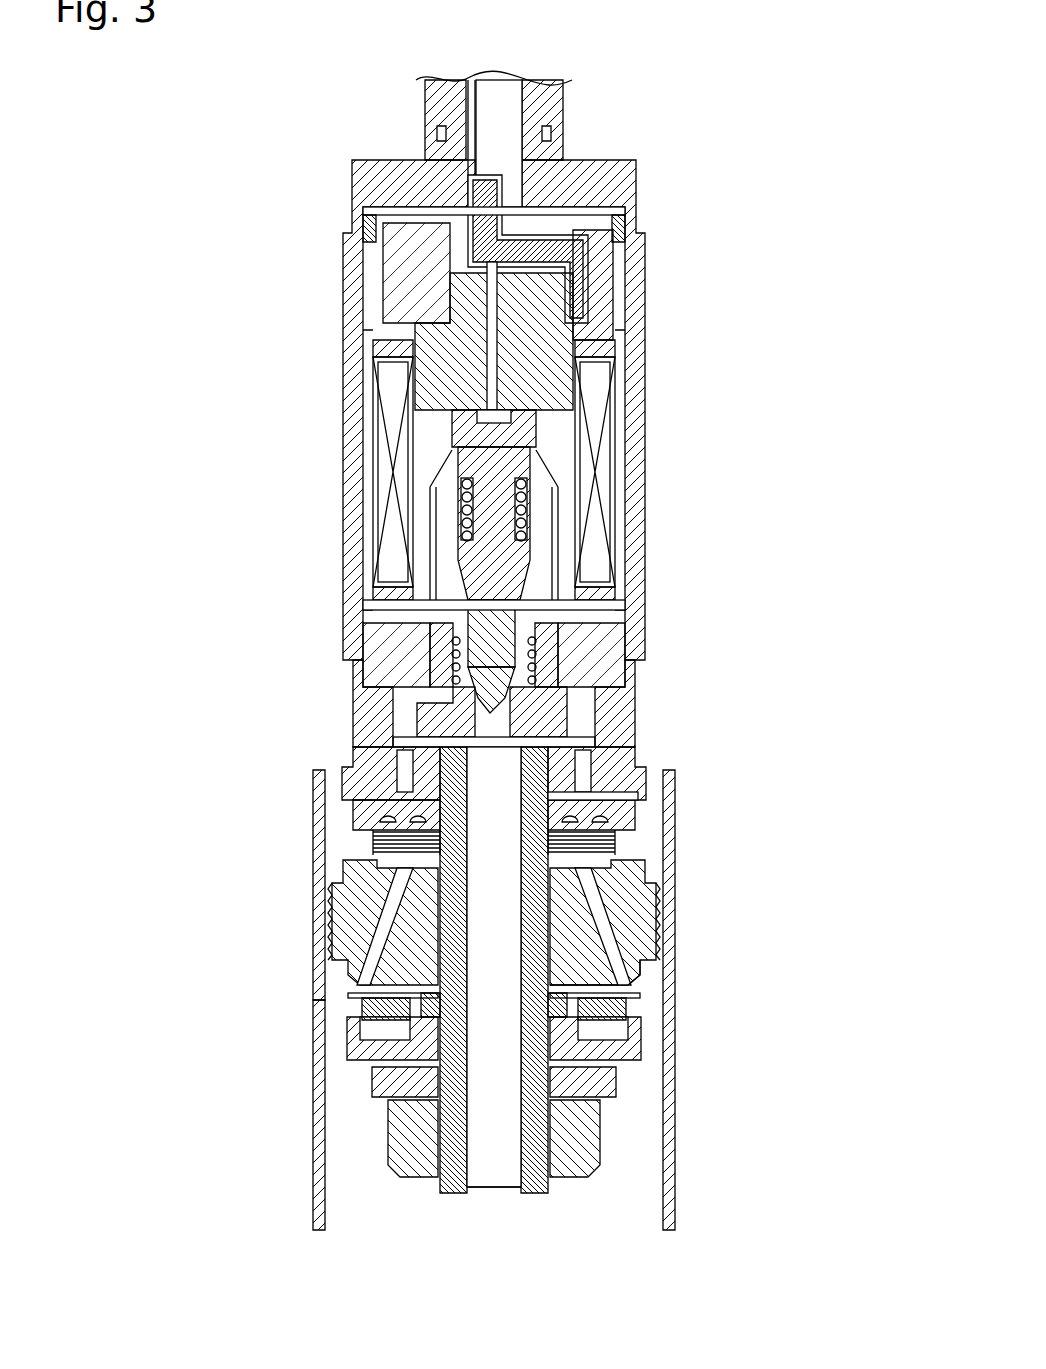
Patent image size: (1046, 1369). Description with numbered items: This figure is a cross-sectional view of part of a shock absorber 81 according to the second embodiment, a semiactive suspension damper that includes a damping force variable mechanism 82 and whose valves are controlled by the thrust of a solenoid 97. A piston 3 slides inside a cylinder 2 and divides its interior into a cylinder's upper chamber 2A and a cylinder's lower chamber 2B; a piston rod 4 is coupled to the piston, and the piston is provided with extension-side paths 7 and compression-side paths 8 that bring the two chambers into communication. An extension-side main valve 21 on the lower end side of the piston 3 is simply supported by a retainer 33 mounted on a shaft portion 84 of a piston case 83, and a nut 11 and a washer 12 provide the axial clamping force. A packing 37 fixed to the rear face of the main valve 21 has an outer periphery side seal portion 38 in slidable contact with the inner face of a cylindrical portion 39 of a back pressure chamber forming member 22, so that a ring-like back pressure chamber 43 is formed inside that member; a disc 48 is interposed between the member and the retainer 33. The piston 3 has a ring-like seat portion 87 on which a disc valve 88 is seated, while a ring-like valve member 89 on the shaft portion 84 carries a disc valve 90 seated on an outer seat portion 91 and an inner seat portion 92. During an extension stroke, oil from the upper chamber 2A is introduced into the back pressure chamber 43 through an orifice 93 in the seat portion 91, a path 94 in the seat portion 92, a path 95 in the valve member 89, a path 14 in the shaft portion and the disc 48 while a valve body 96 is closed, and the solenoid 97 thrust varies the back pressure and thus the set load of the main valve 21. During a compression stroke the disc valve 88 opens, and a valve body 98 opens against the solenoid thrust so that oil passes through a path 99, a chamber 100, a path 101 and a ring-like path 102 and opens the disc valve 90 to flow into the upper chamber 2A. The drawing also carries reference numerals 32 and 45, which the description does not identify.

The piston rod 4 is at (432, 125).
The shock absorber 81 is at (696, 124).
The solenoid 97 is at (630, 462).
The damping force variable mechanism 82 is at (347, 568).
The valve body 96 is at (538, 645).
The piston case 83 is at (634, 695).
The valve body 98 is at (420, 725).
The chamber 100 is at (430, 712).
The path 101 is at (630, 737).
The path 95 is at (627, 768).
The path 94 is at (600, 780).
The cylinder's upper chamber 2A is at (313, 777).
The ring-like path 102 is at (400, 778).
The seat portion 92 is at (400, 800).
The seat portion 91 is at (395, 815).
The disc valve 88 is at (385, 840).
The seat portion 87 is at (390, 852).
The compression-side path 8 is at (400, 885).
The retainer 33 is at (400, 992).
The packing 37 is at (375, 1013).
The disc 48 is at (360, 1038).
The cylinder's lower chamber 2B is at (350, 1160).
The nut 11 is at (415, 1180).
The shaft portion 84 is at (455, 1185).
The path 99 is at (497, 1185).
The cylinder 2 is at (672, 1152).
The washer 12 is at (600, 1100).
The back pressure chamber forming member 22 is at (600, 1075).
The back pressure chamber 43 is at (600, 1050).
The cylindrical portion 39 is at (600, 1040).
The outer periphery side seal portion 38 is at (600, 1030).
The seal 45 is at (590, 1010).
The extension-side main valve 21 is at (640, 992).
The seat 32 is at (605, 990).
The extension-side path 7 is at (600, 925).
The piston 3 is at (662, 921).
The path 14 is at (675, 881).
The disc valve 90 is at (605, 822).
The orifice 93 is at (605, 808).
The valve member 89 is at (610, 795).